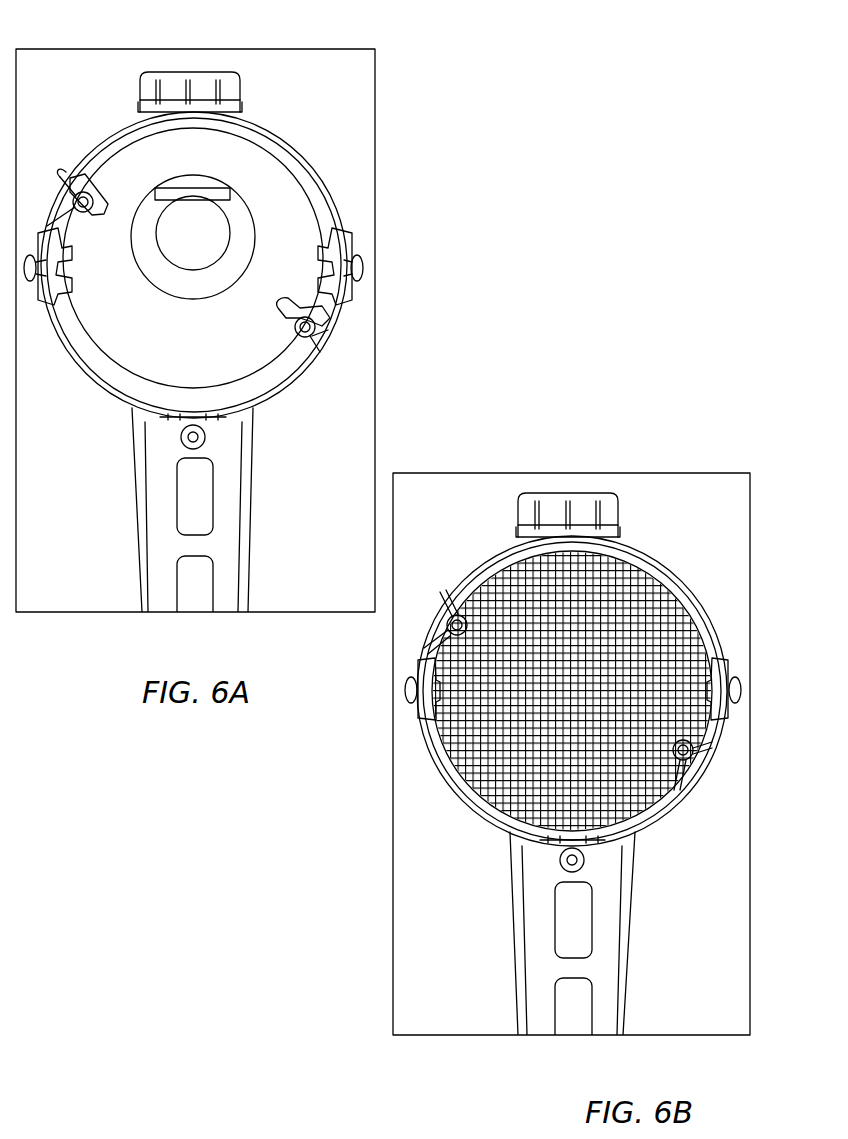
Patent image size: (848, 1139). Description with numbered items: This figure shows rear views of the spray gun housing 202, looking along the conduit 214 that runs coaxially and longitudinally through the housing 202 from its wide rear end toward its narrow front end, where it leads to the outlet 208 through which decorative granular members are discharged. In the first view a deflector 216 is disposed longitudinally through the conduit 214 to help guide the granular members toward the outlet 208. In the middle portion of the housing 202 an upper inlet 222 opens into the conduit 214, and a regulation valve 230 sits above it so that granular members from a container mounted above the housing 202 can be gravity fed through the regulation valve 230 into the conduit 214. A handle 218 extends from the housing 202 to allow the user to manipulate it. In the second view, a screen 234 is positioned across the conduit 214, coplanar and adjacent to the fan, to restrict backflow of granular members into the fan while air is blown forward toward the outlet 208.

In FIG. 6A, the housing 202 is at (60, 177).
In FIG. 6B, the housing 202 is at (698, 780).
In FIG. 6A, the outlet 208 is at (230, 245).
In FIG. 6A, the conduit 214 is at (252, 210).
In FIG. 6A, the deflector 216 is at (240, 347).
In FIG. 6A, the handle 218 is at (148, 523).
In FIG. 6B, the handle 218 is at (517, 958).
In FIG. 6A, the upper inlet 222 is at (197, 207).
In FIG. 6A, the regulation valve 230 is at (240, 107).
In FIG. 6B, the regulation valve 230 is at (617, 512).
In FIG. 6B, the screen 234 is at (497, 558).